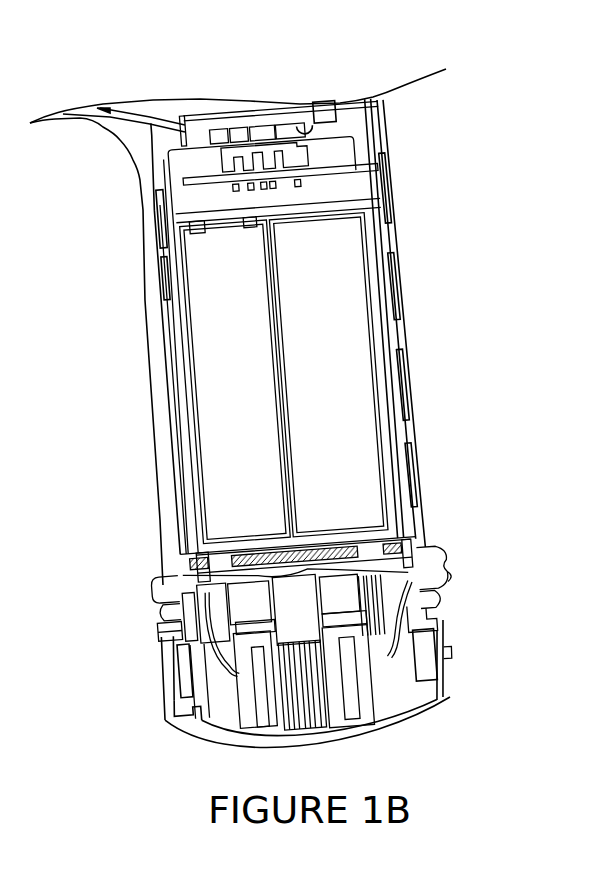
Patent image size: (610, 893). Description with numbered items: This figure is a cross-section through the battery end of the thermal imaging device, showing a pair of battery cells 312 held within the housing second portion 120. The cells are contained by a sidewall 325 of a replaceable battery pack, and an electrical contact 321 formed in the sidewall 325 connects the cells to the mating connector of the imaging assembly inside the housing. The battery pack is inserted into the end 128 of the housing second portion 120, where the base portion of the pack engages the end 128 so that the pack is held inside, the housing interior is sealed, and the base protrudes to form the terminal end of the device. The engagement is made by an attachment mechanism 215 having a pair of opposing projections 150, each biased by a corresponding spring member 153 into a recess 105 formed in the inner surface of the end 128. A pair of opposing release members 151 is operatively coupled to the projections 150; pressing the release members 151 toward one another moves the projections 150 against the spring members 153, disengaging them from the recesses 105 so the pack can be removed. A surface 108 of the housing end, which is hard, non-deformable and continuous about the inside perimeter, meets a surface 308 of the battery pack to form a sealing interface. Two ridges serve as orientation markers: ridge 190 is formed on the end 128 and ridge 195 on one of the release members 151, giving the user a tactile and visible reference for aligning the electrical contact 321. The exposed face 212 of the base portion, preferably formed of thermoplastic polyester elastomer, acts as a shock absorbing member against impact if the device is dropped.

The housing second portion 120 is at (157, 346).
The electrical contact 321 is at (293, 155).
The sidewall 325 is at (183, 387).
The battery cells 312 is at (248, 392).
The surface 308 is at (173, 557).
The end 128 is at (324, 554).
The surface 108 is at (183, 560).
The recess 105 is at (168, 590).
The ridge 190 is at (474, 578).
The attachment mechanism 215 is at (310, 670).
The projection 150 is at (173, 602).
The spring member 153 is at (223, 627).
The release member 151 is at (172, 658).
The ridge 195 is at (447, 650).
The exposed face 212 is at (362, 740).